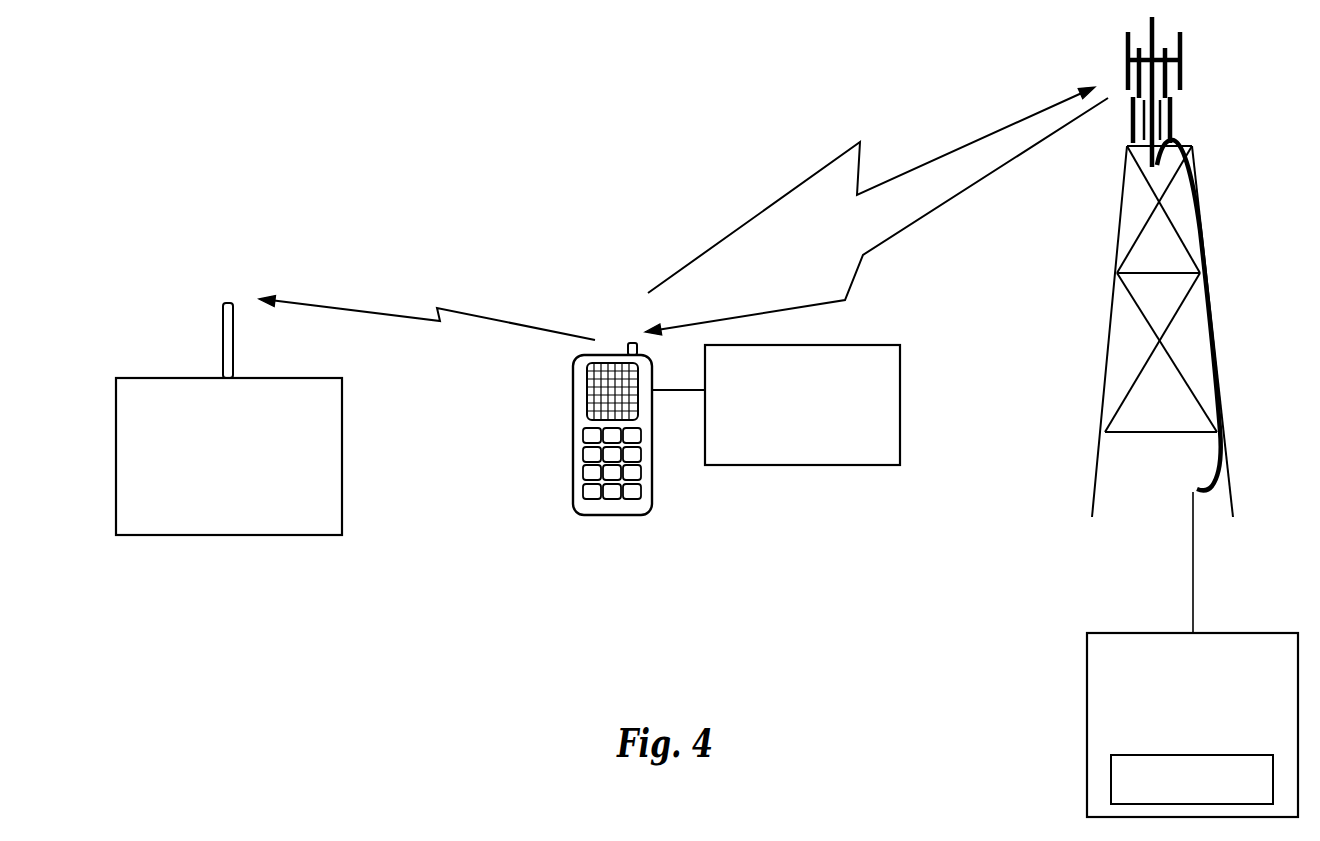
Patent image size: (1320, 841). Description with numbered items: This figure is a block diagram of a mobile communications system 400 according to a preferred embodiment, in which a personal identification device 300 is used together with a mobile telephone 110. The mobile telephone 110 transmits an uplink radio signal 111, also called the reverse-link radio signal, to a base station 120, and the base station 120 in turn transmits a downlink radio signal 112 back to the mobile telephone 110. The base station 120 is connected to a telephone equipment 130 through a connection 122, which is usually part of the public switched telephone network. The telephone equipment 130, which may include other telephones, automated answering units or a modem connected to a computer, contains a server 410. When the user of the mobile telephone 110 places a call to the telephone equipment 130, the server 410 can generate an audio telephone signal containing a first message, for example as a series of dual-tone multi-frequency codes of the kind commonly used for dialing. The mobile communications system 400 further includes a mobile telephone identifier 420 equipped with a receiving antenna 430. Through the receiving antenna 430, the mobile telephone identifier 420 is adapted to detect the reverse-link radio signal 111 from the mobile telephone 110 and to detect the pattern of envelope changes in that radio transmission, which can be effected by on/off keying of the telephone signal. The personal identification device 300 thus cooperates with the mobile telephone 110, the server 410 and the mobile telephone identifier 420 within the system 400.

The mobile communications system 400 is at (680, 219).
The mobile telephone 110 is at (610, 515).
The uplink radio signal 111 is at (395, 313).
The downlink radio signal 112 is at (967, 198).
The base station 120 is at (1122, 192).
The connection 122 is at (1193, 572).
The telephone equipment 130 is at (1087, 676).
The personal identification device 300 is at (745, 465).
The server 410 is at (1111, 778).
The mobile telephone identifier 420 is at (116, 512).
The receiving antenna 430 is at (223, 332).